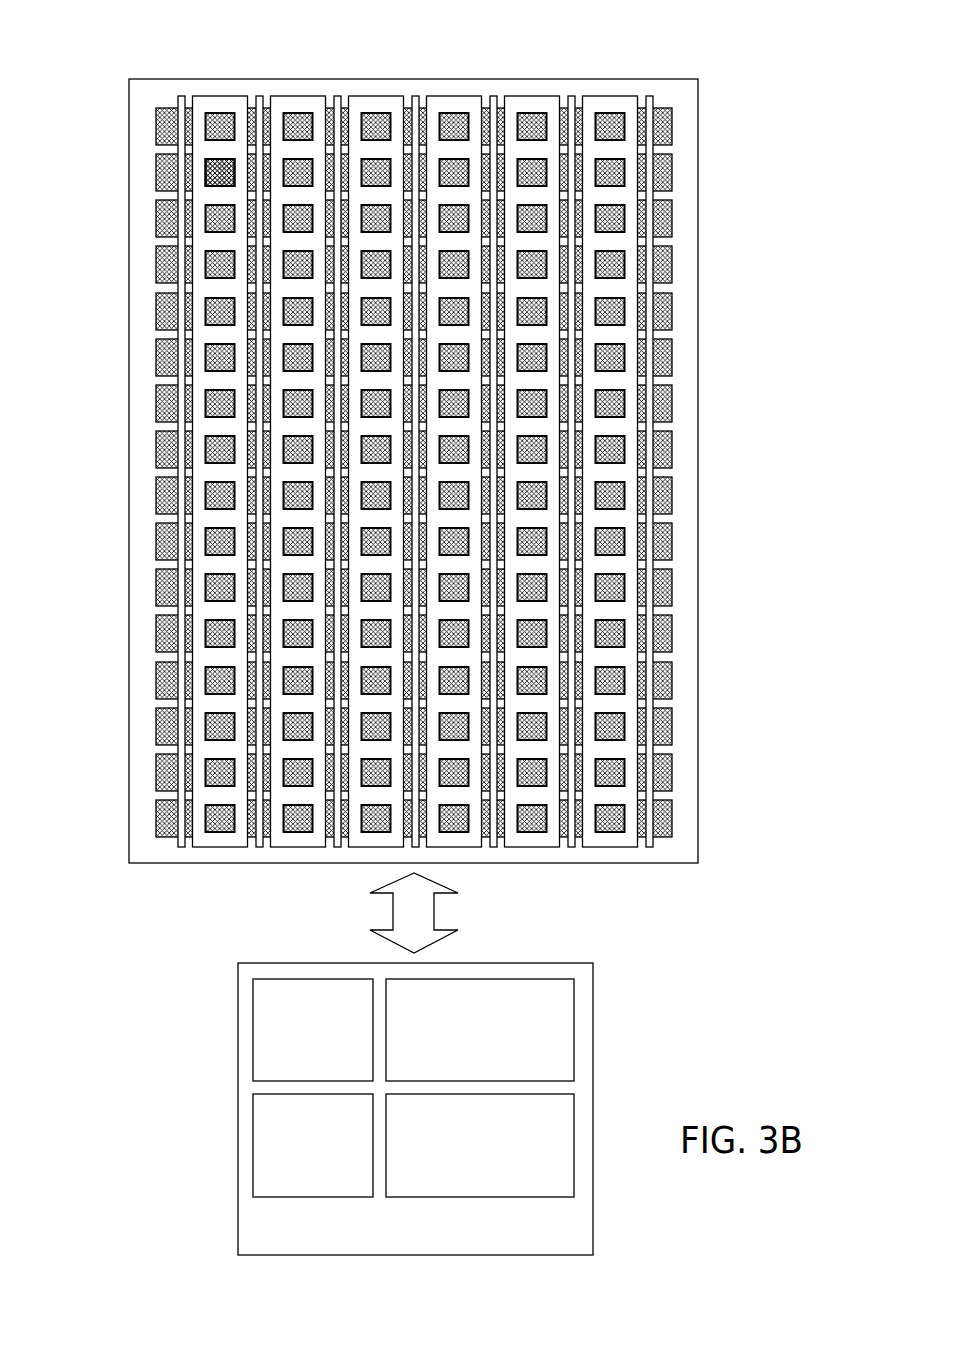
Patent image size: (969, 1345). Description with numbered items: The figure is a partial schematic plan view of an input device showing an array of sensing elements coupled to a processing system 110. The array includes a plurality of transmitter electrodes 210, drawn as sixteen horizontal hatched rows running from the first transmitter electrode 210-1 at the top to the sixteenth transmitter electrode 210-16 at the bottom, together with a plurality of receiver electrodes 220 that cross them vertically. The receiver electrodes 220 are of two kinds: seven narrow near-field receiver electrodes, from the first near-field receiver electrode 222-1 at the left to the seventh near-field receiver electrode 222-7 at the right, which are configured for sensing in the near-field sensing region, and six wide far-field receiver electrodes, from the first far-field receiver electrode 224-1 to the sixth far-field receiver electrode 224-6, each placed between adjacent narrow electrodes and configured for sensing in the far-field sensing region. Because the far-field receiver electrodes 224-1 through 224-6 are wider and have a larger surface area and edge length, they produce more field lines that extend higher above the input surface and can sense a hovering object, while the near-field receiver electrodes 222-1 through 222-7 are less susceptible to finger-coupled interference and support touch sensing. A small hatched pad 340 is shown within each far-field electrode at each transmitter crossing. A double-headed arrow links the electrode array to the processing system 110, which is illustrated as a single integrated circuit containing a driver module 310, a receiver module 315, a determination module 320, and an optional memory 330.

The transmitter electrodes 210 is at (735, 96).
The transmitter electrode 210-1 is at (157, 112).
The transmitter electrode 210-16 is at (157, 815).
The receiver electrodes 220 is at (173, 72).
The near-field receiver electrode 222-1 is at (181, 847).
The near-field receiver electrode 222-7 is at (648, 847).
The far-field receiver electrode 224-1 is at (222, 847).
The far-field receiver electrode 224-6 is at (607, 848).
The sensor electrode pad 340 is at (207, 169).
The processing system 110 is at (520, 1244).
The driver module 310 is at (330, 1067).
The receiver module 315 is at (499, 1067).
The determination module 320 is at (499, 1182).
The memory 330 is at (330, 1182).